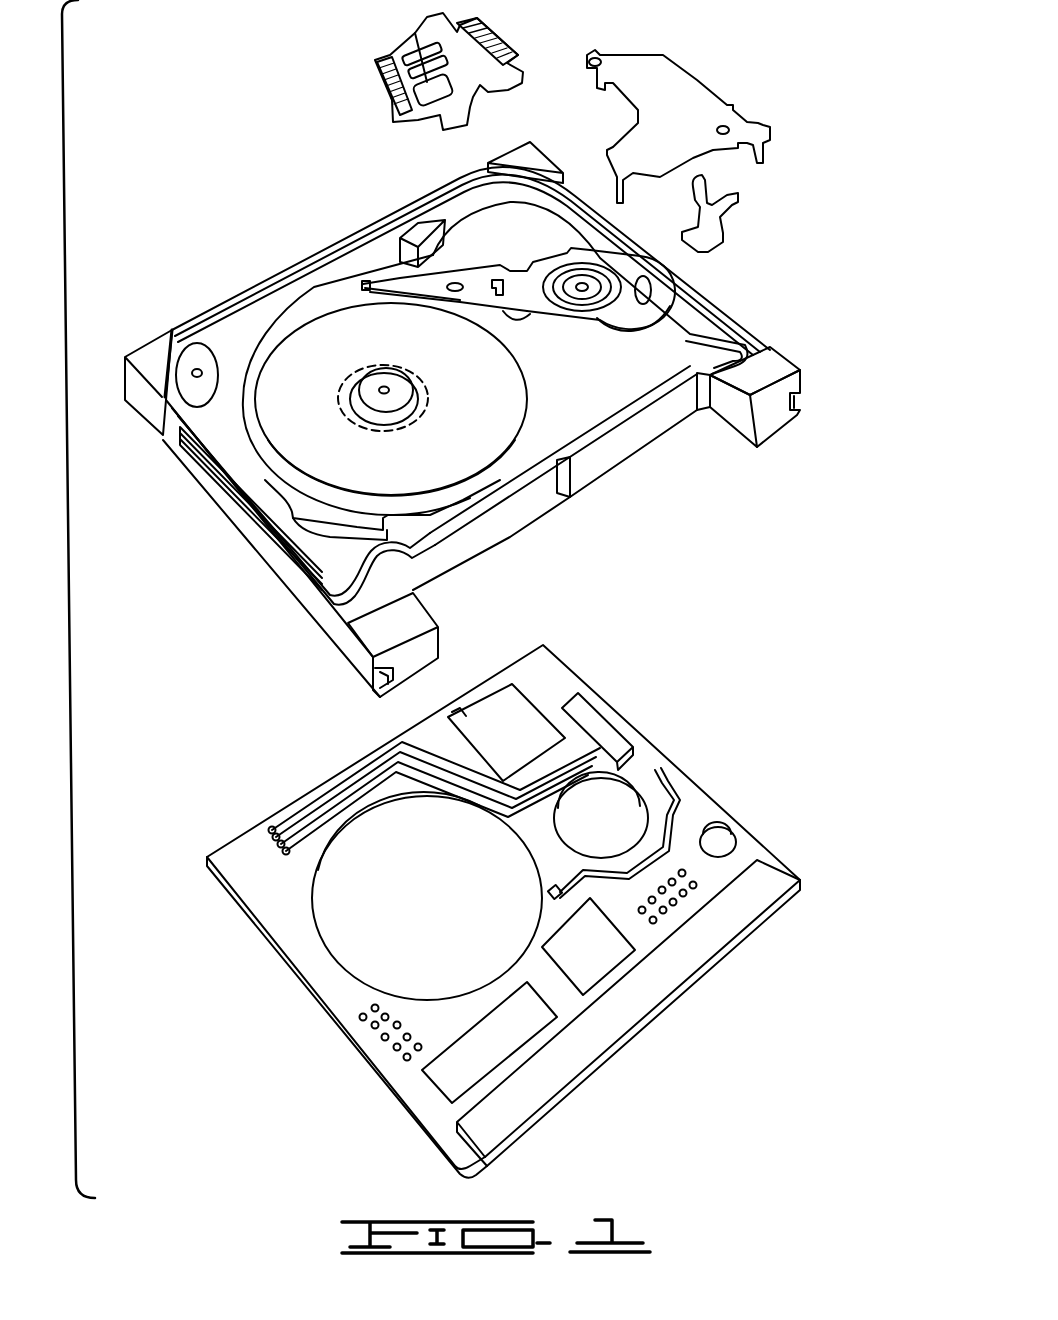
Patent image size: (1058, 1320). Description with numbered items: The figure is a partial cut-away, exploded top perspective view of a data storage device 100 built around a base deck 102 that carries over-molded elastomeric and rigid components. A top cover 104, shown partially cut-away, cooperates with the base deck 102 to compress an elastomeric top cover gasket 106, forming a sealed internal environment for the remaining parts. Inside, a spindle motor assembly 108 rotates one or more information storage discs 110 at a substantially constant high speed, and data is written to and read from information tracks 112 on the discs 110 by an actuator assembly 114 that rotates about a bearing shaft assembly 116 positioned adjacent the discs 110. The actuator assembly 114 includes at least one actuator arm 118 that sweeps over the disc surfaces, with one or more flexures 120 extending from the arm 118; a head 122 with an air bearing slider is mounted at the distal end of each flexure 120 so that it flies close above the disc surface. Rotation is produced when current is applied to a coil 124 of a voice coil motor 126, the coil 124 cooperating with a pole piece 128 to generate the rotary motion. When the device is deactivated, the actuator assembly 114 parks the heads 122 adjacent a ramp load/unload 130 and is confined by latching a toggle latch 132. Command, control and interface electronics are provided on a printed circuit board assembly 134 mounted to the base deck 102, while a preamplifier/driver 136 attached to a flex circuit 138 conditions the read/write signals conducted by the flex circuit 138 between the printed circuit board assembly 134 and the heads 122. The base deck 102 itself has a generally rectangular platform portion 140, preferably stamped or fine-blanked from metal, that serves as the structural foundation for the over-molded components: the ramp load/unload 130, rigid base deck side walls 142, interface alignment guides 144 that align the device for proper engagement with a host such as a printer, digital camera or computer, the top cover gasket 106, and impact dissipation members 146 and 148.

The data storage device 100 is at (252, 105).
The base deck 102 is at (798, 344).
The top cover 104 is at (254, 322).
The top cover gasket 106 is at (292, 538).
The spindle motor assembly 108 is at (400, 388).
The information storage disc 110 is at (327, 338).
The information tracks 112 is at (242, 478).
The actuator assembly 114 is at (543, 320).
The bearing shaft assembly 116 is at (584, 285).
The actuator arm 118 is at (483, 263).
The flexure 120 is at (372, 292).
The head 122 is at (366, 279).
The coil 124 is at (668, 299).
The voice coil motor 126 is at (790, 173).
The pole piece 128 is at (681, 94).
The ramp load/unload 130 is at (422, 222).
The toggle latch 132 is at (719, 231).
The printed circuit board assembly 134 is at (702, 774).
The preamplifier/driver 136 is at (408, 57).
The flex circuit 138 is at (481, 35).
The platform portion 140 is at (691, 358).
The base deck side walls 142 is at (677, 412).
The interface alignment guides 144 is at (815, 387).
The impact dissipation member 146 is at (772, 417).
The impact dissipation member 148 is at (162, 352).